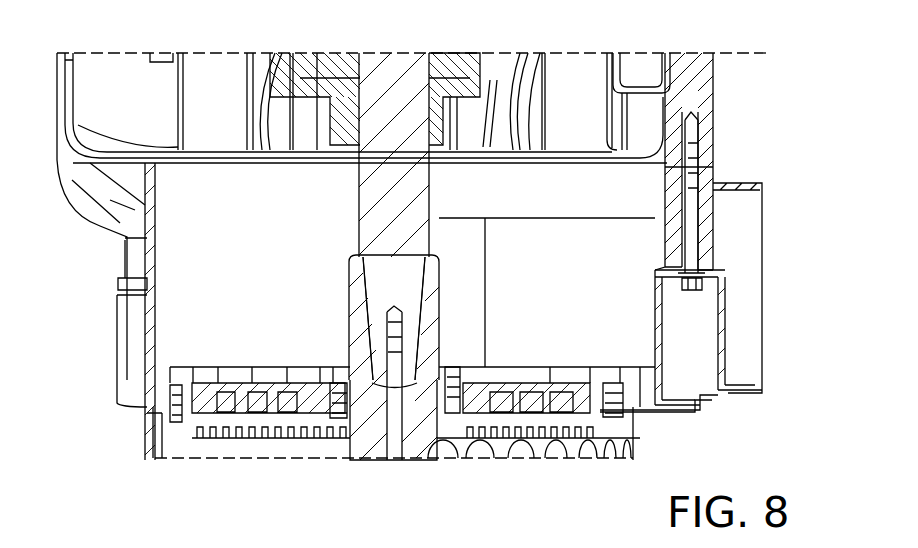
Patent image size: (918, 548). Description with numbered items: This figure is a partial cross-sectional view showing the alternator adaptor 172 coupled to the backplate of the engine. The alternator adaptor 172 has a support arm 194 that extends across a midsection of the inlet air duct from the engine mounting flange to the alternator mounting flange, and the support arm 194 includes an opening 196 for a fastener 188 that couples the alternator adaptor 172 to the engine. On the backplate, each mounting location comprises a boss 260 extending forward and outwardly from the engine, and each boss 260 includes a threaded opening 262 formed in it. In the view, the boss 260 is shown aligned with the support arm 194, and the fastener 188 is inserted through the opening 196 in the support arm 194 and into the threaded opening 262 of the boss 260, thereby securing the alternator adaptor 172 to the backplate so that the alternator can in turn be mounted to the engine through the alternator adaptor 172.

The boss 260 is at (703, 92).
The threaded opening 262 is at (700, 123).
The opening 196 is at (705, 178).
The alternator adaptor 172 is at (740, 233).
The support arm 194 is at (707, 243).
The fastener 188 is at (692, 290).